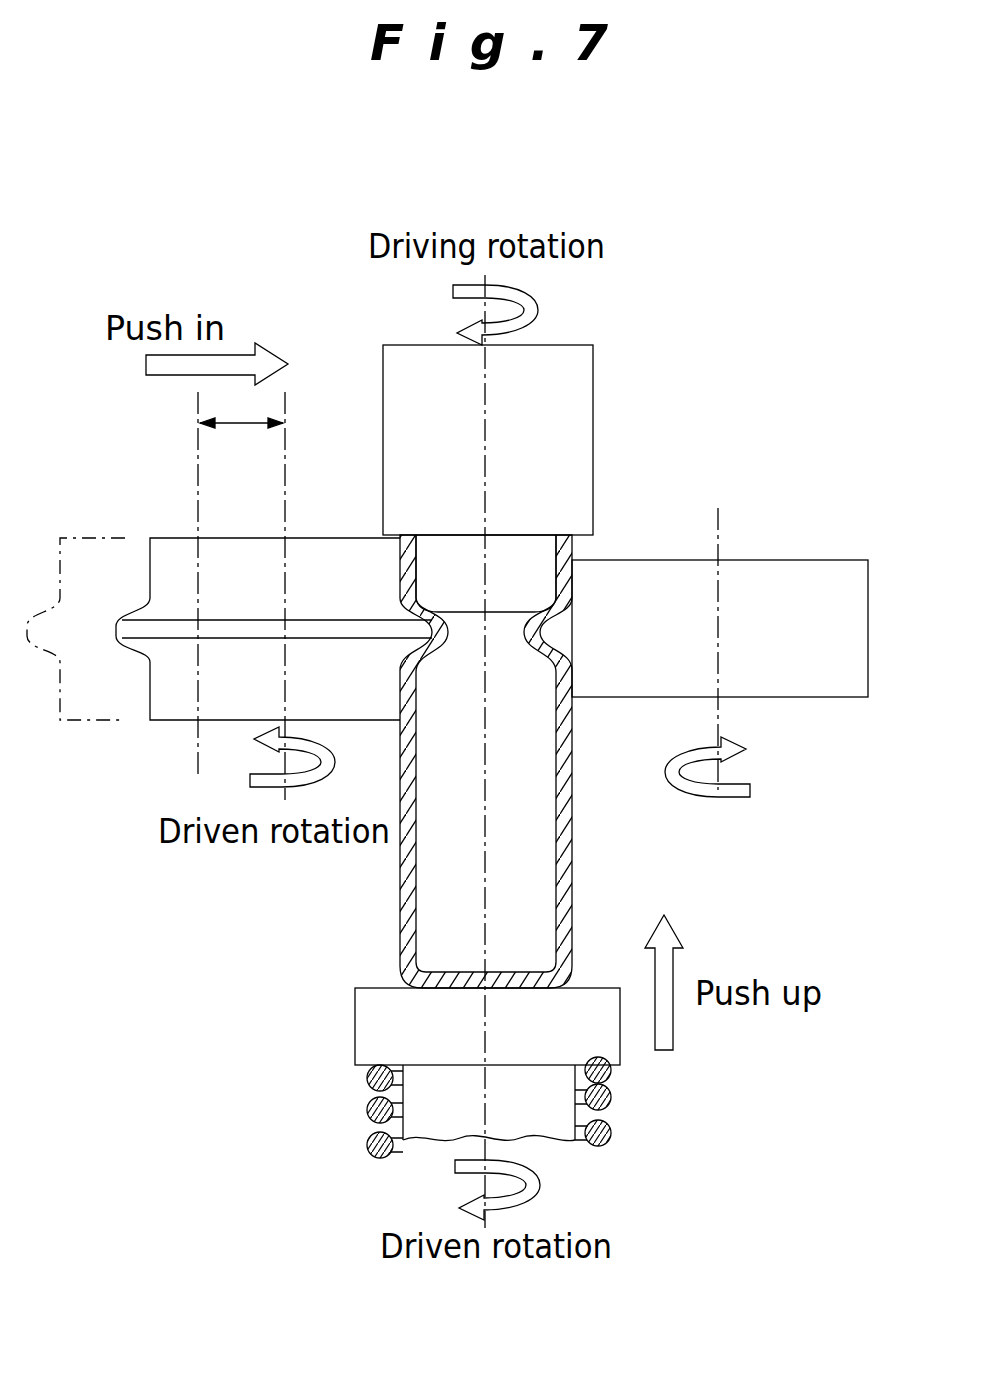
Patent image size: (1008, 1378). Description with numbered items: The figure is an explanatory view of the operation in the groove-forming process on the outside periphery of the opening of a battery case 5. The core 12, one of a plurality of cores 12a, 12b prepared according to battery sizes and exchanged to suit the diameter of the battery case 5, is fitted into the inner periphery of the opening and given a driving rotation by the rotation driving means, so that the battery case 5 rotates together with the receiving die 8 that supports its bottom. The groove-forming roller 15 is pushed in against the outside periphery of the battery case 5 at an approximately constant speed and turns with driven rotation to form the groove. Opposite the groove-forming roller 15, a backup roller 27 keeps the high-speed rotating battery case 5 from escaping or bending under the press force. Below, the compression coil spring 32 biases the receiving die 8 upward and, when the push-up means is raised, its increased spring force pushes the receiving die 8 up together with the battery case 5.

The battery case 5 is at (574, 824).
The receiving die 8 is at (372, 1022).
The core 12 is at (569, 478).
The core 12a is at (570, 398).
The core 12b is at (521, 576).
The groove-forming roller 15 is at (75, 724).
The backup roller 27 is at (803, 560).
The compression coil spring 32 is at (612, 1094).